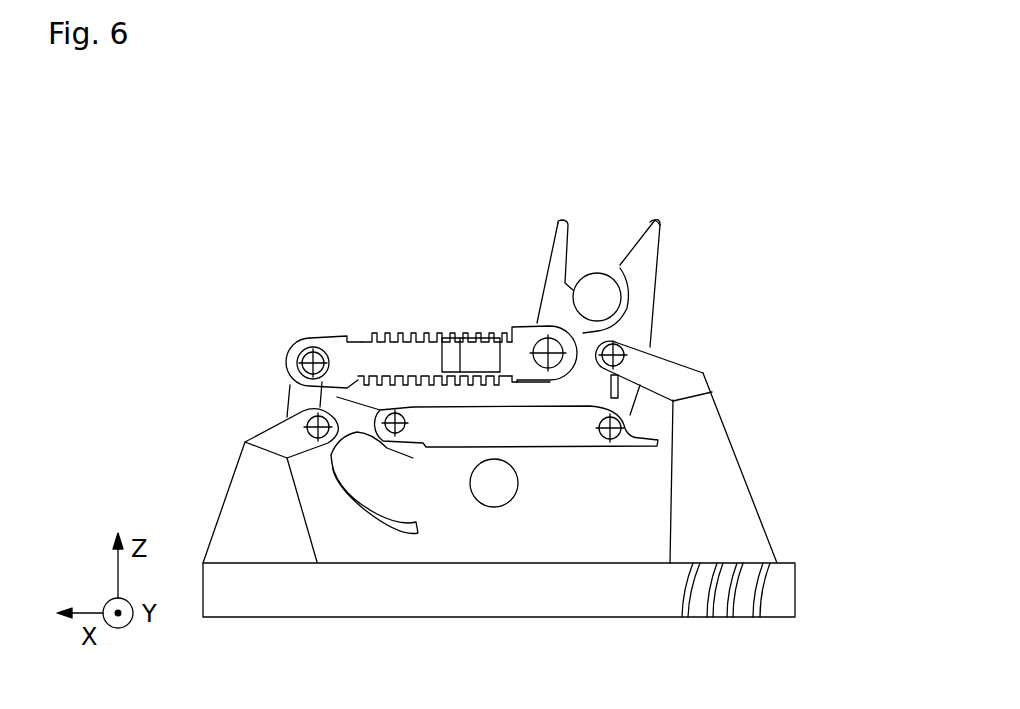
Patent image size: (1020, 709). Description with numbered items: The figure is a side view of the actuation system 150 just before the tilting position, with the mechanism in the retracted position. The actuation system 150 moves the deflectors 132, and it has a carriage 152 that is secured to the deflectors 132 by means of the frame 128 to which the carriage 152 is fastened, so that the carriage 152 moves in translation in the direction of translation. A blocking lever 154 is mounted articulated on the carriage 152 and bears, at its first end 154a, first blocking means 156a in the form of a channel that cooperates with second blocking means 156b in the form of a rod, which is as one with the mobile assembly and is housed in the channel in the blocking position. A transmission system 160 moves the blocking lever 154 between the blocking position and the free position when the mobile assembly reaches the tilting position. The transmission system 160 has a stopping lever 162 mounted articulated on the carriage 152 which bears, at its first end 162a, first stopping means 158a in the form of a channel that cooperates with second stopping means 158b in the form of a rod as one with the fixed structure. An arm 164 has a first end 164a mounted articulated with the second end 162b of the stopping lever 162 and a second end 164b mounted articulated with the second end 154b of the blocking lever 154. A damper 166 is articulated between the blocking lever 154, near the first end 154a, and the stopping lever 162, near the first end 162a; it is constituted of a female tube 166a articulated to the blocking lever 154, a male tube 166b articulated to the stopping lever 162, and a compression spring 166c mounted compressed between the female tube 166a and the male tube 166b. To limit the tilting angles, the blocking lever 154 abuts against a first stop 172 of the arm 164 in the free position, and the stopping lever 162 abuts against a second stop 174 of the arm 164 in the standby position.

The frame 128 is at (777, 602).
The deflectors 132 is at (755, 610).
The actuation system 150 is at (762, 180).
The carriage 152 is at (762, 533).
The blocking lever 154 is at (793, 270).
The first end of the blocking lever 154a is at (647, 295).
The second end of the blocking lever 154b is at (673, 400).
The first blocking means 156a is at (645, 248).
The second blocking means 156b is at (593, 287).
The first stopping means 158a is at (363, 508).
The second stopping means 158b is at (498, 487).
The transmission system 160 is at (203, 217).
The stopping lever 162 is at (175, 348).
The first end of the stopping lever 162a is at (312, 462).
The second end of the stopping lever 162b is at (413, 447).
The arm 164 is at (535, 428).
The first end of the arm 164a is at (337, 397).
The second end of the arm 164b is at (645, 447).
The damper 166 is at (400, 250).
The female tube 166a is at (522, 317).
The male tube 166b is at (305, 337).
The spring 166c is at (373, 337).
The first stop 172 is at (660, 432).
The second stop 174 is at (440, 438).